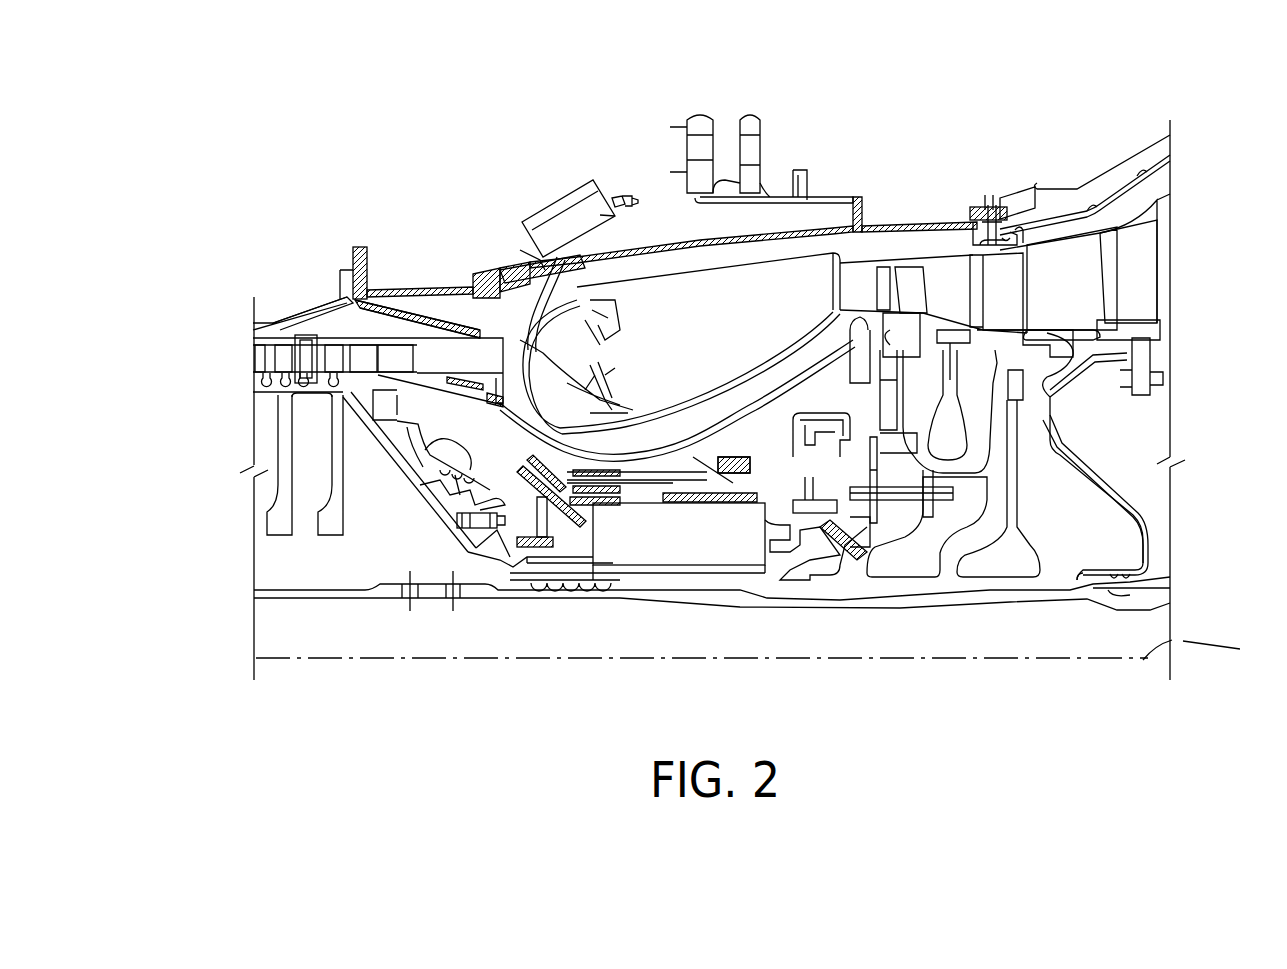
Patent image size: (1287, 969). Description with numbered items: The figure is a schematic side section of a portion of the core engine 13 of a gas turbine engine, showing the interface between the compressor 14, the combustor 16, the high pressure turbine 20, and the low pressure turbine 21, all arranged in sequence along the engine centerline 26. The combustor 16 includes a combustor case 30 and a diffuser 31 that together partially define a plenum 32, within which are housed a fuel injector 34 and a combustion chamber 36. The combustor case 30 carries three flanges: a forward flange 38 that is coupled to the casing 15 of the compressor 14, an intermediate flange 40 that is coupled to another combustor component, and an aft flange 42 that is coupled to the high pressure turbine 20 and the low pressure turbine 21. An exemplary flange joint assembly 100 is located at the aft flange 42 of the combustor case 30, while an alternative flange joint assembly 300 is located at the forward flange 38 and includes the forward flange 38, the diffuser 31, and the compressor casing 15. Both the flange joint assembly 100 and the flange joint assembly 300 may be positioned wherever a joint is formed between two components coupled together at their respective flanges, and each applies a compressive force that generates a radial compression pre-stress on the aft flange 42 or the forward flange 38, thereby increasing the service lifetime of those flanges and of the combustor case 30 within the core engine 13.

The core engine 13 is at (268, 176).
The compressor 14 is at (236, 351).
The casing 15 is at (314, 310).
The combustor 16 is at (552, 187).
The high pressure turbine 20 is at (1030, 405).
The low pressure turbine 21 is at (1186, 165).
The engine centerline axis 26 is at (766, 649).
The combustor case 30 is at (668, 232).
The diffuser 31 is at (483, 397).
The plenum 32 is at (576, 424).
The fuel injector 34 is at (612, 354).
The combustion chamber 36 is at (758, 316).
The forward flange 38 is at (370, 258).
The intermediate flange 40 is at (806, 174).
The aft flange 42 is at (990, 204).
The flange joint assembly 100 is at (966, 202).
The flange joint assembly 300 is at (372, 238).